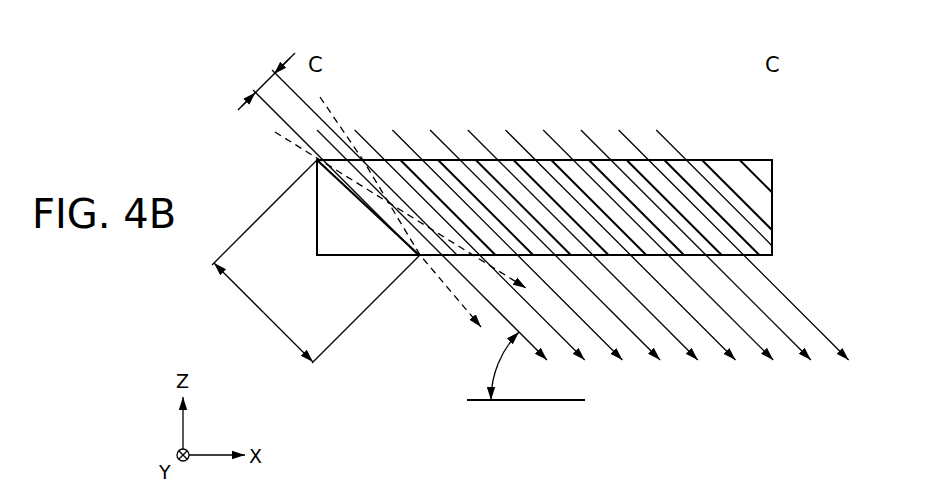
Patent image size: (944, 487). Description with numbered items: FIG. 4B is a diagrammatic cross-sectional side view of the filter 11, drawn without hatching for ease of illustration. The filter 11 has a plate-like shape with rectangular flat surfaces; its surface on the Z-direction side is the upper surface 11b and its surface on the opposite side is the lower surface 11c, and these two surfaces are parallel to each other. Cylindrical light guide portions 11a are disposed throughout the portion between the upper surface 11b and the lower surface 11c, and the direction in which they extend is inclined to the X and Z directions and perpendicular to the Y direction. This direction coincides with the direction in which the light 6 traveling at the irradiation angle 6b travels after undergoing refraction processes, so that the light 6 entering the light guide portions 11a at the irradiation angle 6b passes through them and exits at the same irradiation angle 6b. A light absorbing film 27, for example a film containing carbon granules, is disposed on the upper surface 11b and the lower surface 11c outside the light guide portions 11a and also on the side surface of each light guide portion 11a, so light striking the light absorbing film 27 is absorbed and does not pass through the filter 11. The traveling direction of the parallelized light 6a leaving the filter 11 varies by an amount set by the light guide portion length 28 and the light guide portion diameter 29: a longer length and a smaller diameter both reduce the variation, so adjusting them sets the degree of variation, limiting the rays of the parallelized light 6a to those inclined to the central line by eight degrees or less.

The filter 11 is at (773, 205).
The light guide portions 11a is at (682, 173).
The upper surface 11b is at (738, 160).
The lower surface 11c is at (325, 257).
The light absorbing film 27 is at (541, 172).
The light guide portion diameter 29 is at (262, 72).
The light guide portion length 28 is at (263, 315).
The light 6 is at (543, 228).
The parallelized light 6a is at (803, 317).
The irradiation angle 6b is at (495, 363).